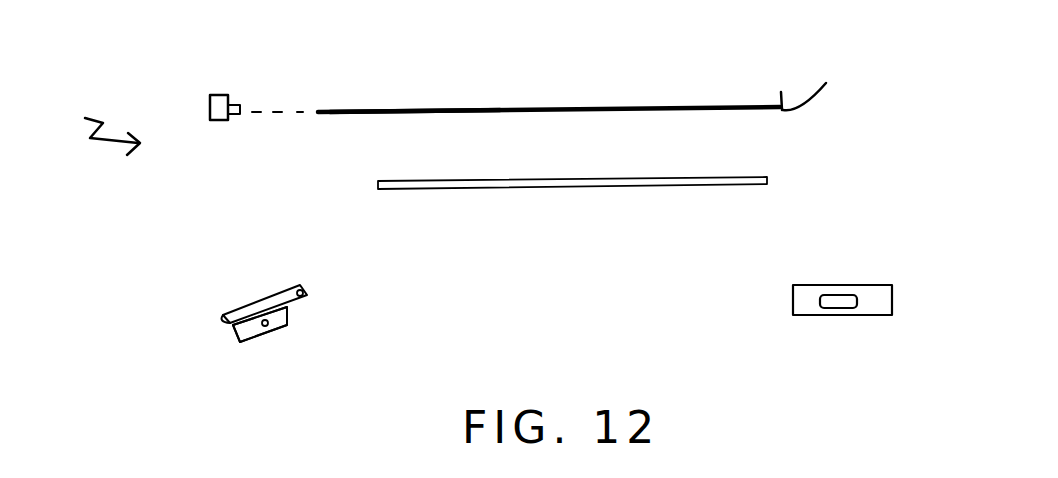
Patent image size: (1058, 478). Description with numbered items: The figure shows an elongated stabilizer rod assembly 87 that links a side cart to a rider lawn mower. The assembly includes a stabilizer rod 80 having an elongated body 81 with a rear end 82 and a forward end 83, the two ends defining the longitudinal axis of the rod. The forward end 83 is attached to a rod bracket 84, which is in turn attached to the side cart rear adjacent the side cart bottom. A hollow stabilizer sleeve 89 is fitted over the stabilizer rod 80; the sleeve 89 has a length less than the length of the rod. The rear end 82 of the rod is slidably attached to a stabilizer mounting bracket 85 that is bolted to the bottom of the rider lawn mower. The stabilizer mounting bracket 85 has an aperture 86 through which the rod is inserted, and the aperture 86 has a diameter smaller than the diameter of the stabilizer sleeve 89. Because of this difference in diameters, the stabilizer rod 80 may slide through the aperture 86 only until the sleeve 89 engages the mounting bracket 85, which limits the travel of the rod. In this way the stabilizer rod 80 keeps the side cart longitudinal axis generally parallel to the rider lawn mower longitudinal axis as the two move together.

The stabilizer rod 80 is at (550, 105).
The elongated body 81 is at (415, 105).
The rear end 82 is at (316, 118).
The forward end 83 is at (832, 83).
The rod bracket 84 is at (880, 283).
The stabilizer mounting bracket 85 is at (237, 337).
The aperture 86 is at (277, 320).
The stabilizer rod assembly 87 is at (95, 111).
The stabilizer sleeve 89 is at (550, 188).